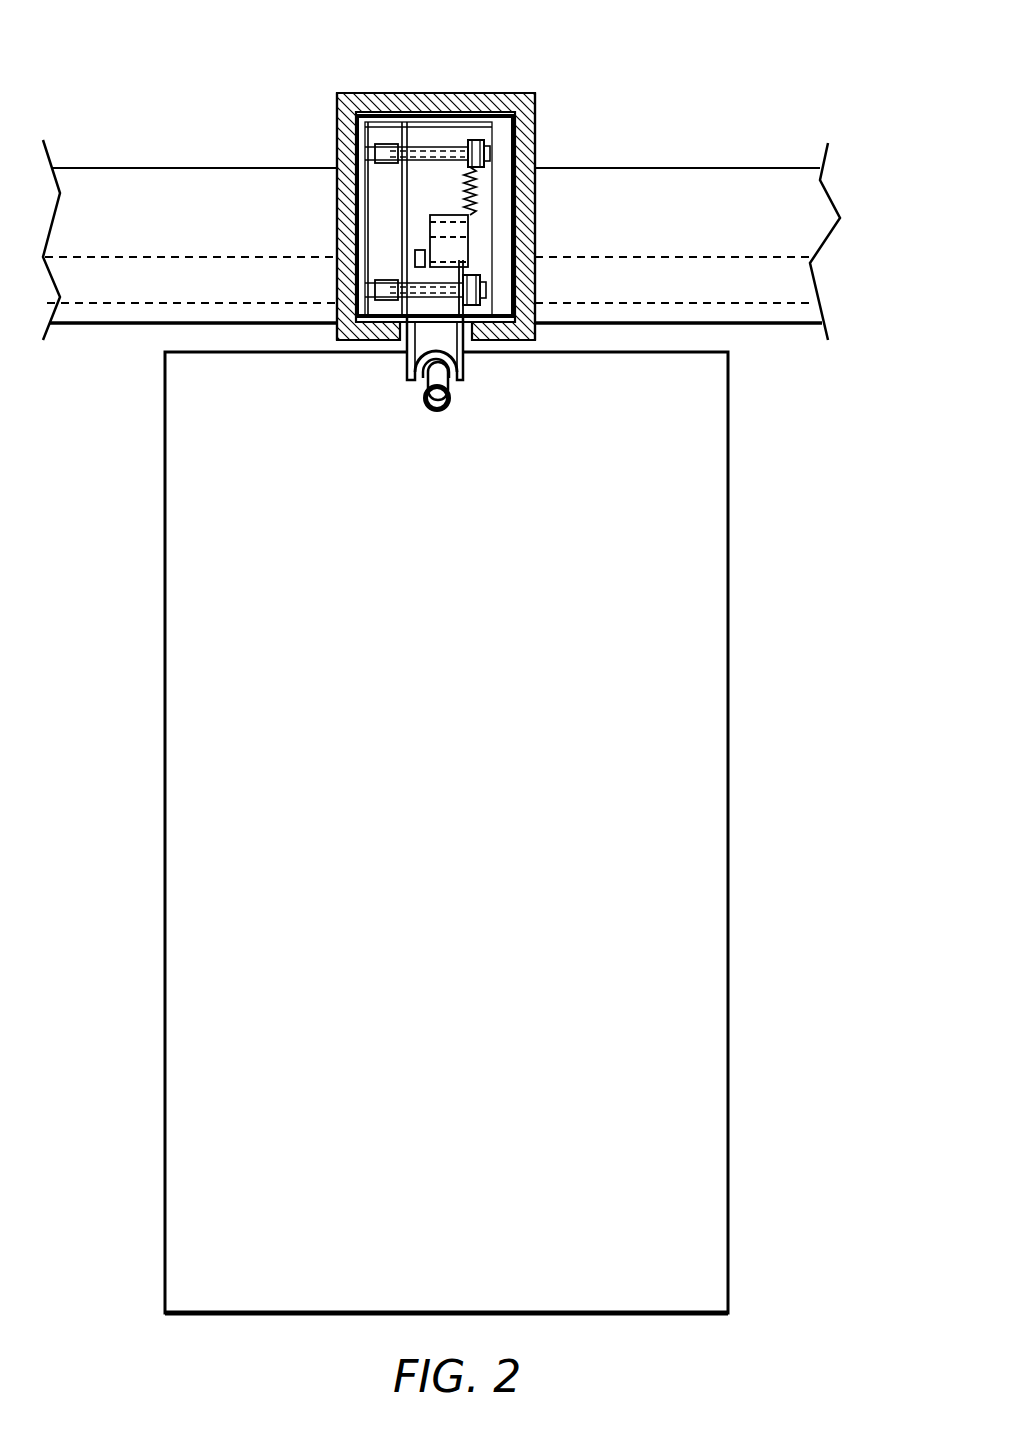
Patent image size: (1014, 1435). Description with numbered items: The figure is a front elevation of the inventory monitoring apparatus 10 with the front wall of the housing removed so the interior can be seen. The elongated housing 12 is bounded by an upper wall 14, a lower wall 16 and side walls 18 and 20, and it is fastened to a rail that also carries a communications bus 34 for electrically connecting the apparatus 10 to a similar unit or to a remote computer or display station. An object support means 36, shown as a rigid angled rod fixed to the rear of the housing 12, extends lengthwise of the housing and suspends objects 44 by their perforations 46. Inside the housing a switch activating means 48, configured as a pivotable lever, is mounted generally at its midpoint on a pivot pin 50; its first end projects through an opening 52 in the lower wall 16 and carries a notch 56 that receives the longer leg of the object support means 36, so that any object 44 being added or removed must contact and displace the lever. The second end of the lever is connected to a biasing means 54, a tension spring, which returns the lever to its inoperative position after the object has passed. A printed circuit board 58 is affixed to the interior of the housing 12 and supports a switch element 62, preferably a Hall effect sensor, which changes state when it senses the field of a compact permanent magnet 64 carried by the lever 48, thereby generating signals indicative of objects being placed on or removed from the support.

The inventory monitoring apparatus 10 is at (433, 241).
The housing 12 is at (445, 88).
The upper wall 14 is at (356, 100).
The lower wall 16 is at (518, 343).
The side wall 18 is at (337, 262).
The side wall 20 is at (527, 135).
The communications bus 34 is at (716, 258).
The object support means 36 is at (427, 378).
The object 44 is at (455, 808).
The perforation 46 is at (447, 410).
The switch activating means 48 is at (465, 215).
The pivot pin 50 is at (488, 290).
The opening 52 is at (405, 358).
The biasing means 54 is at (493, 205).
The notch 56 is at (456, 380).
The printed circuit board 58 is at (397, 180).
The switch element 62 is at (415, 250).
The permanent magnet 64 is at (455, 240).